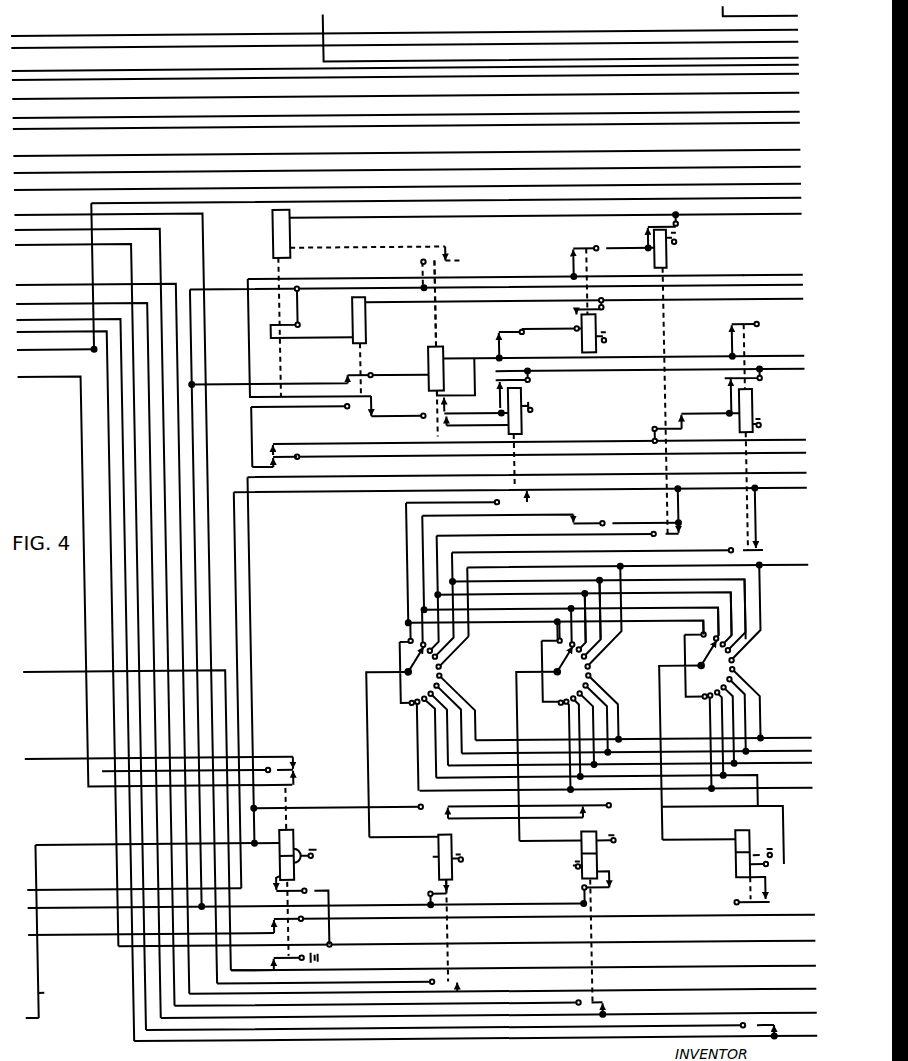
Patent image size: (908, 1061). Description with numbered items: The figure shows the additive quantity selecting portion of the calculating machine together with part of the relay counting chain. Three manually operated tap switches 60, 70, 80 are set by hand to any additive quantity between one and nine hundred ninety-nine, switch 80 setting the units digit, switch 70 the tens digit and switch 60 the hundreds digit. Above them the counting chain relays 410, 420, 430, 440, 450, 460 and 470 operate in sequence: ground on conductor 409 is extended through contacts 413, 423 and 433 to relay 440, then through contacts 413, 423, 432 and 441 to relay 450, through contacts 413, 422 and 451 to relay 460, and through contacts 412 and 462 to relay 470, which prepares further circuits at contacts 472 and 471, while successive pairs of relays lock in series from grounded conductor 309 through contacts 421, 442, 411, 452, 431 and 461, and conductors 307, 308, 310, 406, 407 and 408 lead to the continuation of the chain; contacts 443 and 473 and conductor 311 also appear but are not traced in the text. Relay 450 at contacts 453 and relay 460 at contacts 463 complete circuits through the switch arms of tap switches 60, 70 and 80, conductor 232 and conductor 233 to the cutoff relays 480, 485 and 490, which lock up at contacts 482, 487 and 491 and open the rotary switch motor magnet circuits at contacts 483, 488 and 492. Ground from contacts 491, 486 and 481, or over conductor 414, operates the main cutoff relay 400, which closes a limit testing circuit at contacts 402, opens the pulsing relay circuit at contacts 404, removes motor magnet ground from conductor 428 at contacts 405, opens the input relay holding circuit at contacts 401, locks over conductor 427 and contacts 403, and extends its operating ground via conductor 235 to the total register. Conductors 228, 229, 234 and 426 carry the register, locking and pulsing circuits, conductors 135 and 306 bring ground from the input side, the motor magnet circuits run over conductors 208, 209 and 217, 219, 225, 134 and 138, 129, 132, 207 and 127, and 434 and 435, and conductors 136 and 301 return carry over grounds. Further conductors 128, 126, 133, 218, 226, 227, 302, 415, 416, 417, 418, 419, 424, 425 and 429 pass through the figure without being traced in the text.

The conductor 128 is at (56, 34).
The conductor 127 is at (59, 46).
The conductor 302 is at (327, 19).
The conductor 301 is at (726, 21).
The conductor 126 is at (60, 70).
The conductor 136 is at (61, 79).
The conductor 129 is at (60, 98).
The conductor 132 is at (60, 116).
The conductor 207 is at (59, 128).
The conductor 208 is at (64, 154).
The conductor 209 is at (63, 172).
The conductor 217 is at (62, 189).
The conductor 306 is at (806, 206).
The conductor 218 is at (60, 214).
The conductor 307 is at (806, 224).
The conductor 219 is at (60, 229).
The conductor 225 is at (58, 245).
The conductor 133 is at (60, 283).
The conductor 134 is at (60, 302).
The conductor 138 is at (60, 318).
The conductor 226 is at (58, 332).
The conductor 135 is at (58, 350).
The conductor 227 is at (63, 377).
The conductor 228 is at (58, 670).
The conductor 229 is at (56, 756).
The conductor 232 is at (68, 887).
The conductor 233 is at (70, 907).
The conductor 234 is at (70, 933).
The conductor 235 is at (152, 929).
The conductor 308 is at (805, 278).
The conductor 309 is at (745, 280).
The conductor 310 is at (803, 296).
The conductor 311 is at (808, 318).
The conductor 406 is at (803, 360).
The conductor 407 is at (806, 372).
The conductor 408 is at (802, 446).
The conductor 409 is at (801, 464).
The conductor 414 is at (801, 480).
The conductor 415 is at (800, 496).
The conductor 416 is at (805, 573).
The conductor 417 is at (643, 730).
The conductor 418 is at (636, 744).
The conductor 419 is at (630, 757).
The conductor 424 is at (747, 794).
The conductor 425 is at (791, 794).
The conductor 426 is at (798, 920).
The conductor 427 is at (798, 940).
The conductor 428 is at (798, 964).
The conductor 429 is at (798, 990).
The conductor 434 is at (796, 1013).
The conductor 435 is at (762, 1046).
The contacts 492 is at (762, 1036).
The relay 410 is at (276, 232).
The contacts 431 is at (450, 255).
The contacts 411 is at (309, 337).
The relay 420 is at (367, 328).
The contacts 421 is at (342, 383).
The relay 430 is at (429, 362).
The contacts 432 is at (446, 411).
The contacts 422 is at (375, 410).
The contacts 423 is at (352, 412).
The contacts 433 is at (420, 428).
The contacts 412 is at (274, 449).
The contacts 413 is at (272, 462).
The relay 440 is at (521, 432).
The contacts 441 is at (512, 342).
The contacts 442 is at (520, 388).
The contact 443 is at (528, 503).
The contacts 453 is at (576, 528).
The contacts 463 is at (680, 537).
The contact 473 is at (756, 550).
The contacts 451 is at (566, 262).
The contacts 461 is at (646, 240).
The relay 460 is at (680, 243).
The contacts 452 is at (568, 324).
The relay 450 is at (599, 335).
The contacts 471 is at (724, 337).
The contacts 472 is at (725, 397).
The relay 470 is at (758, 409).
The contacts 462 is at (657, 426).
The tap switch 60 is at (411, 709).
The tap switch 70 is at (554, 703).
The tap switch 80 is at (692, 702).
The contacts 401 is at (290, 770).
The contacts 402 is at (288, 777).
The main cutoff relay 400 is at (288, 846).
The contacts 403 is at (286, 892).
The contacts 404 is at (272, 914).
The contacts 405 is at (262, 966).
The contacts 481 is at (442, 815).
The contacts 486 is at (584, 810).
The cutoff relay 480 is at (450, 862).
The contacts 482 is at (449, 892).
The contacts 483 is at (456, 988).
The cutoff relay 485 is at (590, 857).
The contacts 487 is at (601, 890).
The contacts 488 is at (596, 1008).
The cutoff relay 490 is at (724, 862).
The contacts 491 is at (756, 907).